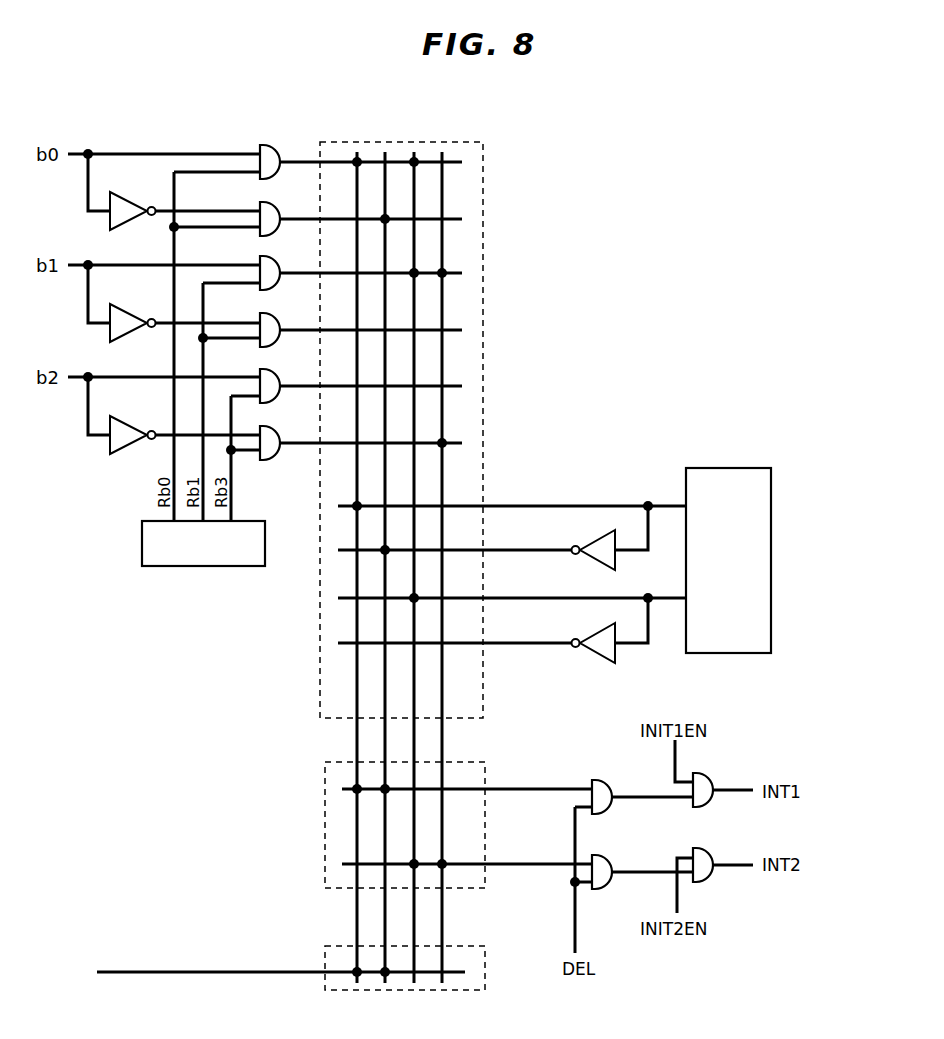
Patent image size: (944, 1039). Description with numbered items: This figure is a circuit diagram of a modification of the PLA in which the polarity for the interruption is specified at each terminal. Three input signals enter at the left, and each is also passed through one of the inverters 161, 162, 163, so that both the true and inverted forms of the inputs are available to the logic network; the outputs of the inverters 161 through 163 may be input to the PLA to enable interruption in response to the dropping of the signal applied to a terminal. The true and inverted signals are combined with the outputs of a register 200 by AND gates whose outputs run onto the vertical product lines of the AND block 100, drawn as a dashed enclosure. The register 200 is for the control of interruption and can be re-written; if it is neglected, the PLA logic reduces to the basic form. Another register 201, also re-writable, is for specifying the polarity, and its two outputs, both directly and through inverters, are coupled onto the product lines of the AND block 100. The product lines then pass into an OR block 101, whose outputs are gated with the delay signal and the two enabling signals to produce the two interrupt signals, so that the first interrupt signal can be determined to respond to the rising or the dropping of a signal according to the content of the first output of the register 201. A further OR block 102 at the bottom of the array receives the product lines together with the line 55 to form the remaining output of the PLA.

The input line 55 is at (269, 973).
The AND block 100 is at (483, 267).
The OR block 101 is at (485, 873).
The OR block 102 is at (485, 965).
The inverter 161 is at (110, 222).
The inverter 162 is at (110, 331).
The inverter 163 is at (110, 444).
The register 200 is at (230, 566).
The register 201 is at (771, 487).